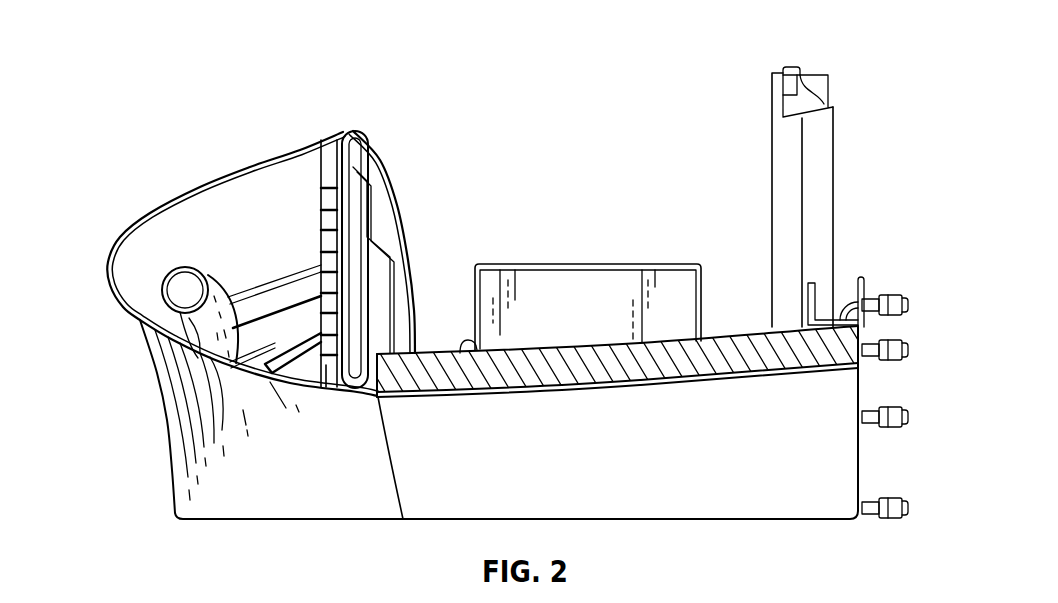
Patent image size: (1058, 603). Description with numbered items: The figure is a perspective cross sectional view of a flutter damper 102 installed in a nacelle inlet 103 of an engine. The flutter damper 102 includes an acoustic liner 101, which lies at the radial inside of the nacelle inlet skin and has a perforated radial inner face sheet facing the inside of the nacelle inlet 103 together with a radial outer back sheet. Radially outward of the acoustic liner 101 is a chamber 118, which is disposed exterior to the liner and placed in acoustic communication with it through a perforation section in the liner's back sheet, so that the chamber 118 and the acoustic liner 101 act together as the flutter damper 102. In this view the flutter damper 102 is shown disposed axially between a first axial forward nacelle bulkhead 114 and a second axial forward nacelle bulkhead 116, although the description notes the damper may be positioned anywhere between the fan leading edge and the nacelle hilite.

The acoustic liner 101 is at (427, 372).
The flutter damper 102 is at (597, 113).
The nacelle inlet 103 is at (131, 126).
The first axial forward nacelle bulkhead 114 is at (346, 132).
The second axial forward nacelle bulkhead 116 is at (814, 75).
The chamber 118 is at (634, 250).